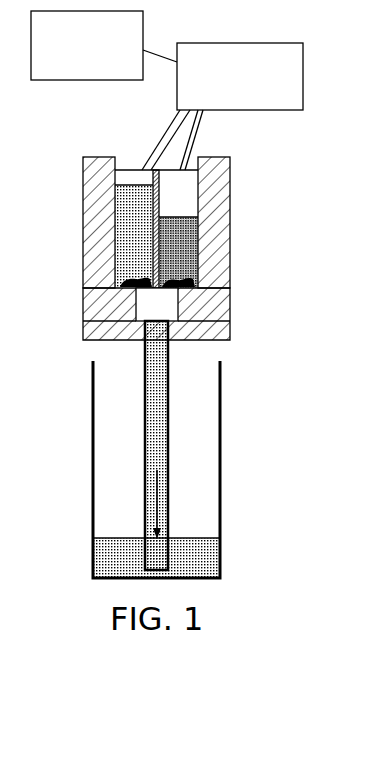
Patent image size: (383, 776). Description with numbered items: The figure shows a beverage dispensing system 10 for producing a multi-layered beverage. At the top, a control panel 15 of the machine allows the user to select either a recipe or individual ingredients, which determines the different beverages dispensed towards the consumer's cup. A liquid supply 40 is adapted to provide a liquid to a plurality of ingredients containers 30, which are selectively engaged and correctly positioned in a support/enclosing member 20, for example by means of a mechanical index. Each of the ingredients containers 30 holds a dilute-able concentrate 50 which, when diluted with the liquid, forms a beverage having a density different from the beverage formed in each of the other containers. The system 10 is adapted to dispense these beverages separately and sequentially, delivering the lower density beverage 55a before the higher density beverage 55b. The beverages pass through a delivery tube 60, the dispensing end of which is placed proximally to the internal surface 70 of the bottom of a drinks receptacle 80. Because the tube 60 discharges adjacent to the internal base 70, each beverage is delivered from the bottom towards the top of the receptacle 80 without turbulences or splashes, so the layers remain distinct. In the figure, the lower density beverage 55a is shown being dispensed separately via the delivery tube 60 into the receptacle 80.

The control panel 15 is at (87, 45).
The liquid supply 40 is at (240, 76).
The beverage dispensing system 10 is at (260, 165).
The support/enclosing member 20 is at (230, 276).
The ingredients containers 30 is at (138, 170).
The lower density beverage 55a is at (102, 240).
The higher density beverage 55b is at (187, 240).
The dilute-able concentrate 50 is at (83, 290).
The delivery tube 60 is at (145, 356).
The drinks receptacle 80 is at (221, 400).
The internal surface of the bottom 70 is at (200, 574).